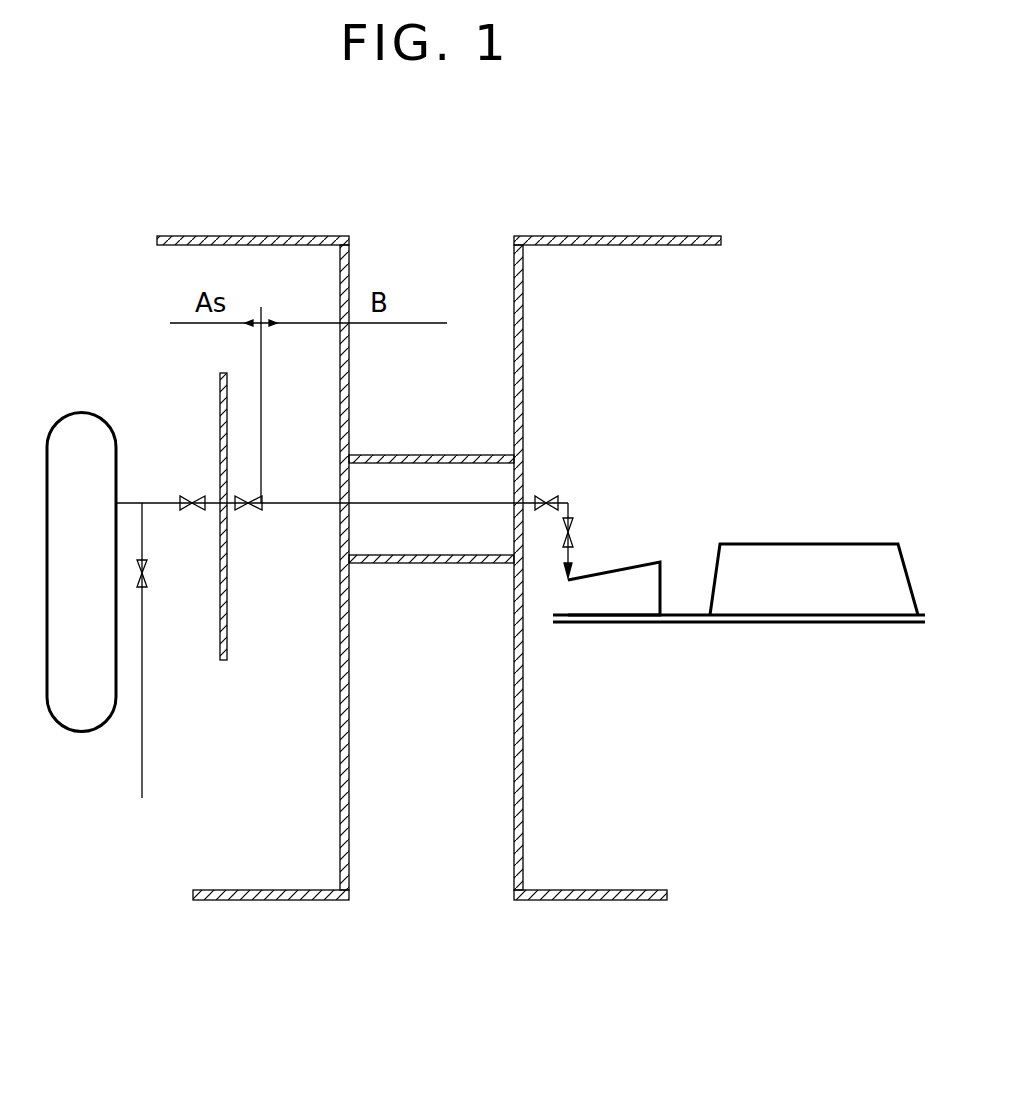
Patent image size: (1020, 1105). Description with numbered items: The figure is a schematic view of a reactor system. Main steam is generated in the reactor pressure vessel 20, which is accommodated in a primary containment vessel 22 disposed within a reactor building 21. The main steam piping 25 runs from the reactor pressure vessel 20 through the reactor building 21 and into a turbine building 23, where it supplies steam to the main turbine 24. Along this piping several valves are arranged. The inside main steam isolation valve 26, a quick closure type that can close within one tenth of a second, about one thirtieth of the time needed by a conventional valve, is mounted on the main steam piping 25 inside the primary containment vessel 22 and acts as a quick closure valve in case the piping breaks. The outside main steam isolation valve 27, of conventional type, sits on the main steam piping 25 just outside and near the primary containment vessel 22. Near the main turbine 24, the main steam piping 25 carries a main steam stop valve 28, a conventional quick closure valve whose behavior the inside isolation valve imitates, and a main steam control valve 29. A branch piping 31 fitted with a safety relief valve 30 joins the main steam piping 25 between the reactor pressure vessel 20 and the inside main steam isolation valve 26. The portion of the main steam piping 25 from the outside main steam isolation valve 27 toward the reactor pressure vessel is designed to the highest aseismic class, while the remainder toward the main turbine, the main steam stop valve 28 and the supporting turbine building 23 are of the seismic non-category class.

The reactor pressure vessel 20 is at (94, 413).
The reactor building 21 is at (240, 236).
The primary containment vessel 22 is at (221, 394).
The turbine building 23 is at (638, 236).
The main turbine 24 is at (655, 562).
The main steam piping 25 is at (447, 505).
The inside main steam isolation valve 26 is at (190, 496).
The outside main steam isolation valve 27 is at (243, 511).
The main steam stop valve 28 is at (550, 496).
The main steam control valve 29 is at (575, 530).
The safety relief valve 30 is at (148, 576).
The piping 31 is at (143, 733).